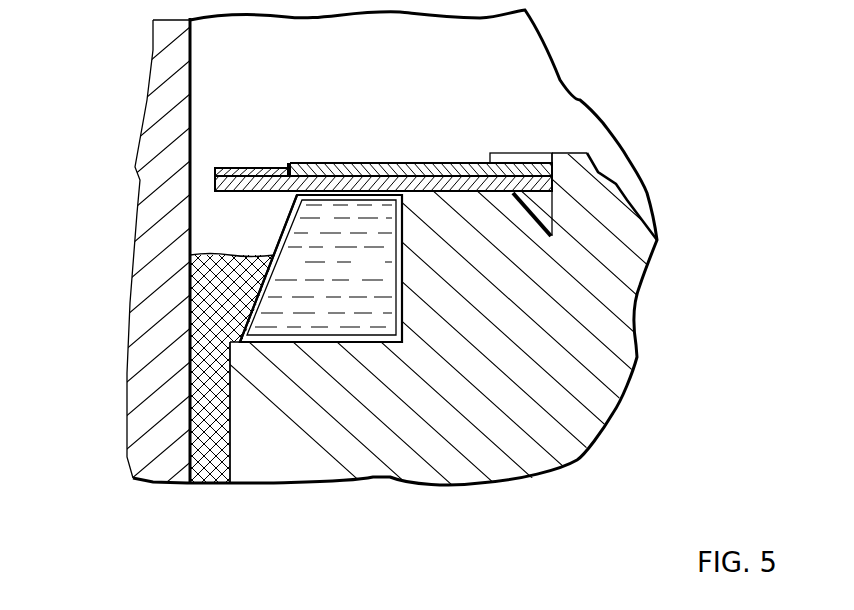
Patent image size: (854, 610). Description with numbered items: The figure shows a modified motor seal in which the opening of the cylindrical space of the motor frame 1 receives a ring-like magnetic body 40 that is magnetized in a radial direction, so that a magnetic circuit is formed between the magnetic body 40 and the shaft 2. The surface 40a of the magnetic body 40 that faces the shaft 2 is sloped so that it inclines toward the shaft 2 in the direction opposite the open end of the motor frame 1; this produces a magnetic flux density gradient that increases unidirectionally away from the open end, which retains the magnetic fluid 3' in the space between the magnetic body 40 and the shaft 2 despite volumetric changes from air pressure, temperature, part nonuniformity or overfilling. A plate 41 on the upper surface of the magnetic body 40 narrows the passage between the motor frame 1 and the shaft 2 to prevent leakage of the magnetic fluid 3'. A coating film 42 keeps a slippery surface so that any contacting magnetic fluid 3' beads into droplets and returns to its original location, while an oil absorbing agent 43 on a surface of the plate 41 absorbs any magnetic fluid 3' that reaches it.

The motor frame 1 is at (628, 277).
The shaft 2 is at (158, 327).
The magnetic fluid 3' is at (176, 342).
The magnetic body 40 is at (285, 233).
The surface of the magnetic body 40a is at (280, 223).
The plate 41 is at (405, 177).
The coating film 42 is at (243, 172).
The oil absorbing agent 43 is at (587, 153).